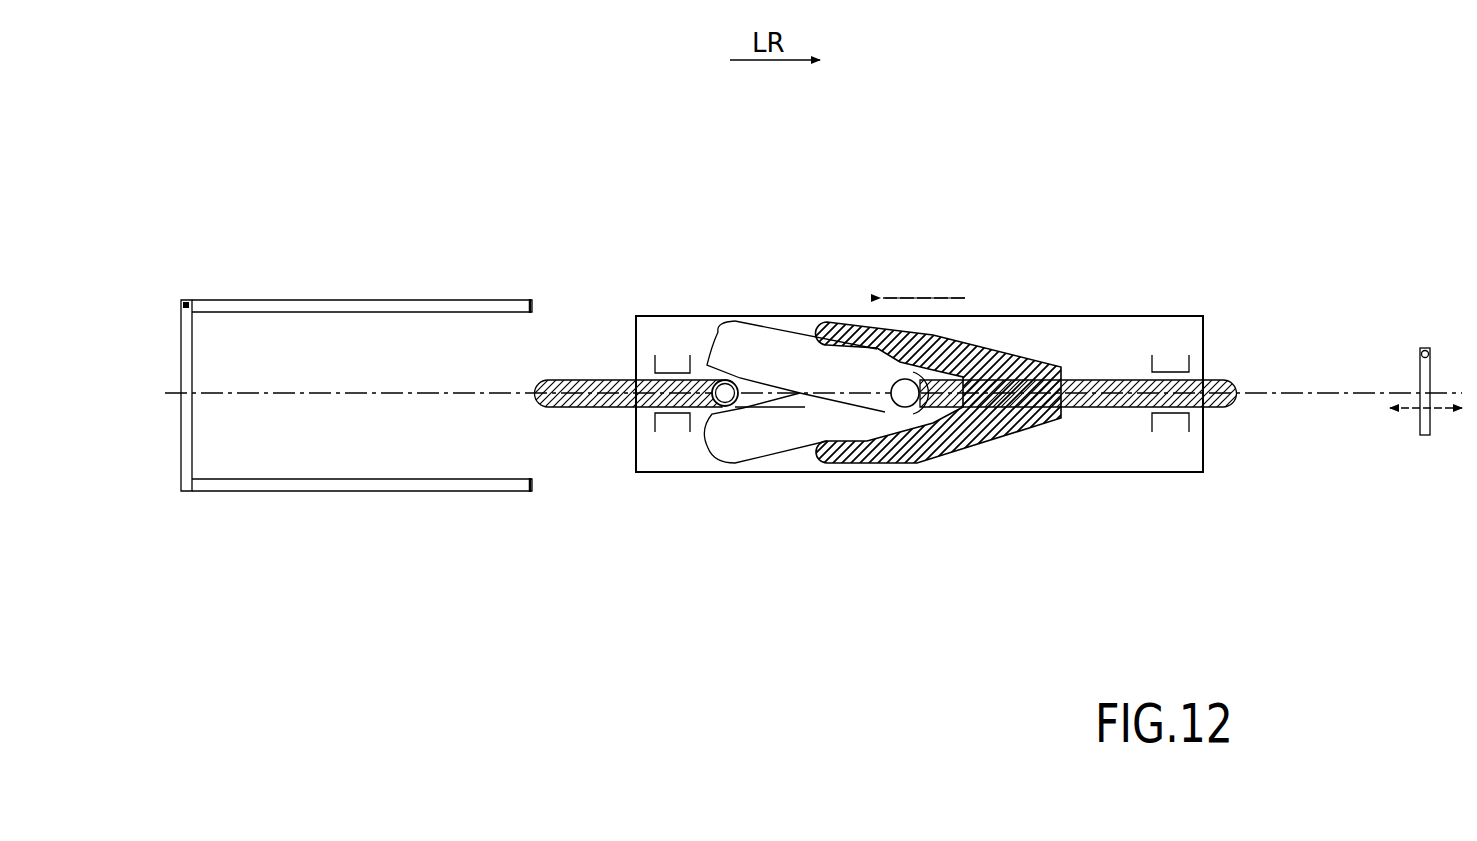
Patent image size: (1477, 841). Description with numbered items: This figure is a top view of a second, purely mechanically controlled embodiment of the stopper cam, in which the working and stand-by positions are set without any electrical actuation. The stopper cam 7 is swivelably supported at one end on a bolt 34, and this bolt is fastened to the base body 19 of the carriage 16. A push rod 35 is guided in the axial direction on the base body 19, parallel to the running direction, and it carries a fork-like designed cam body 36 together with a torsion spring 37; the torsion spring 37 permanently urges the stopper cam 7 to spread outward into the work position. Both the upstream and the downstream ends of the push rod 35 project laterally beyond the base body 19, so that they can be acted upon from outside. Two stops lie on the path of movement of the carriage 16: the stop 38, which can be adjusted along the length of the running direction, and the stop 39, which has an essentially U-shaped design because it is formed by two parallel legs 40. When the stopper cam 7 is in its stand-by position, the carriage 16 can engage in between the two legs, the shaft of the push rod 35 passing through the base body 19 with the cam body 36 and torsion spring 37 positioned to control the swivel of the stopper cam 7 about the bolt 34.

The stopper cam 7 is at (775, 362).
The carriage 16 is at (808, 493).
The base body 19 is at (1100, 345).
The bolt 34 is at (905, 372).
The push rod 35 is at (588, 397).
The cam body 36 is at (1010, 393).
The torsion spring 37 is at (723, 397).
The upstream stop 38 is at (1420, 350).
The upstream stop 39 is at (188, 302).
The parallel legs 40 is at (365, 485).